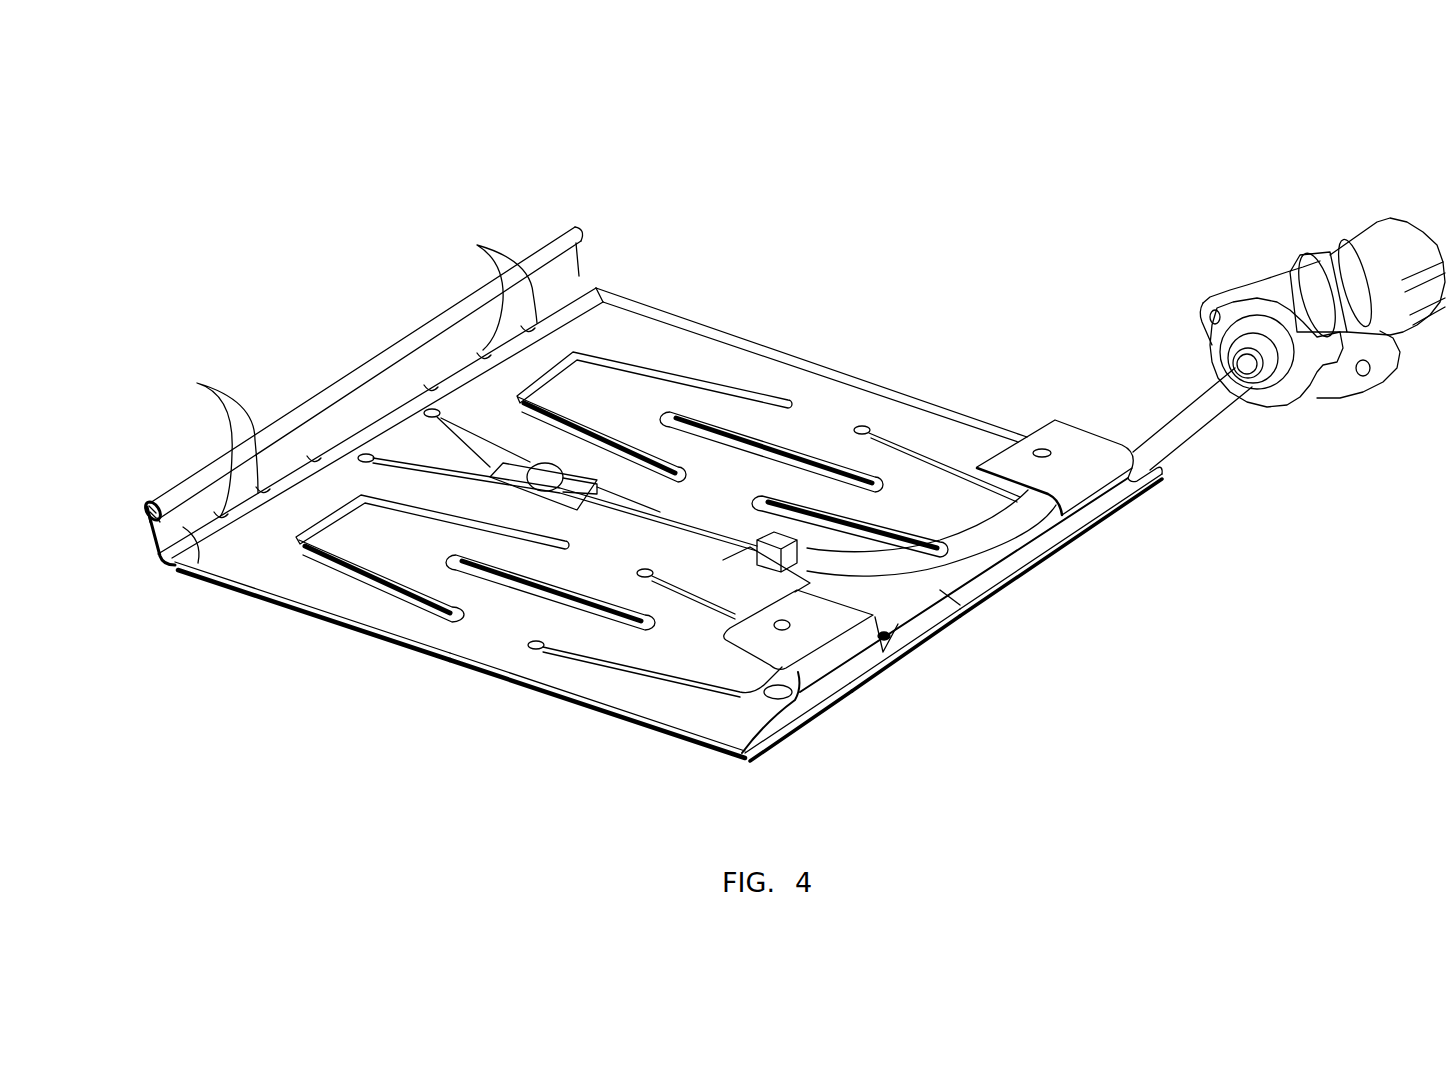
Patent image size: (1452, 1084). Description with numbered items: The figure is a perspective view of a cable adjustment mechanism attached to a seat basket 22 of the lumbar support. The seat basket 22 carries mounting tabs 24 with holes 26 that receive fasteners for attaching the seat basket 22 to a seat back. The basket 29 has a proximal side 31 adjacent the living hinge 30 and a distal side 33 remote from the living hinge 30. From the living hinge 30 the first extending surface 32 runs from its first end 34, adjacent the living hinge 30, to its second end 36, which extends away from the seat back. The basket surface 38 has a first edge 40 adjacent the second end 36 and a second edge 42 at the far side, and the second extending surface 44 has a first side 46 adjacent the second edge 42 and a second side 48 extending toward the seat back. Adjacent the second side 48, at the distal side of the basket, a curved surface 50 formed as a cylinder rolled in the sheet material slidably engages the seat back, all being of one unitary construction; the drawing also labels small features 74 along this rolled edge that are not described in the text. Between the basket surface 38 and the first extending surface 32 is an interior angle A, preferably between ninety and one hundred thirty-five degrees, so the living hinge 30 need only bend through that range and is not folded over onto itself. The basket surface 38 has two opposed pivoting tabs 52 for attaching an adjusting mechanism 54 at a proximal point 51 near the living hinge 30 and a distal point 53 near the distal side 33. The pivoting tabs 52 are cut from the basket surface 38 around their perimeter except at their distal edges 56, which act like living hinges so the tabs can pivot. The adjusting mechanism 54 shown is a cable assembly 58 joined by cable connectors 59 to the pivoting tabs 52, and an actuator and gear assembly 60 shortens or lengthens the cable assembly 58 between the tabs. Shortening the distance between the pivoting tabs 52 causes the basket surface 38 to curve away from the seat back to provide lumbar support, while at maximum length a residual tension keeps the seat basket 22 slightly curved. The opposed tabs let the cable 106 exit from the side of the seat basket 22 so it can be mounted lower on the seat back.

The seat basket 22 is at (493, 647).
The mounting tabs 24 is at (1090, 436).
The holes 26 is at (1042, 450).
The basket 29 is at (874, 405).
The living hinge 30 is at (1143, 457).
The proximal side 31 is at (837, 680).
The first extending surface 32 is at (812, 702).
The distal side 33 is at (585, 257).
The first end 34 is at (845, 662).
The second end 36 is at (803, 672).
The basket surface 38 is at (830, 400).
The first edge 40 is at (728, 752).
The second edge 42 is at (598, 295).
The second extending surface 44 is at (581, 277).
The first side 46 is at (160, 563).
The second side 48 is at (150, 520).
The curved surface 50 is at (576, 228).
The proximal point 51 is at (797, 590).
The pivoting tabs 52 is at (432, 412).
The distal point 53 is at (445, 653).
The adjusting mechanism 54 is at (660, 515).
The distal edges 56 is at (402, 438).
The cable assembly 58 is at (931, 533).
The cable connectors 59 is at (470, 617).
The actuator and gear assembly 60 is at (1333, 397).
The clip 74 is at (208, 382).
The cable 106 is at (1195, 417).
The interior angle A is at (157, 522).